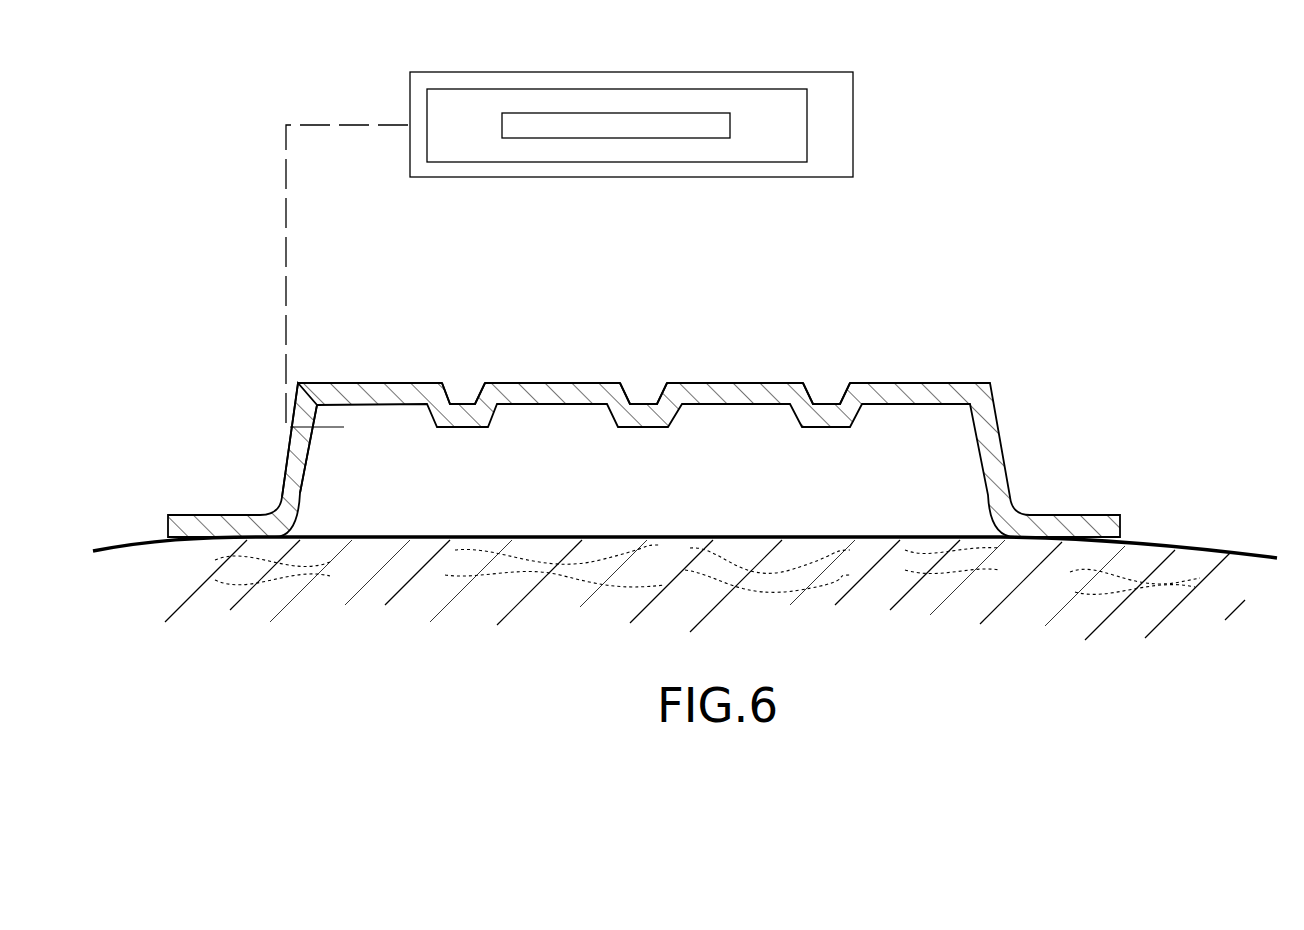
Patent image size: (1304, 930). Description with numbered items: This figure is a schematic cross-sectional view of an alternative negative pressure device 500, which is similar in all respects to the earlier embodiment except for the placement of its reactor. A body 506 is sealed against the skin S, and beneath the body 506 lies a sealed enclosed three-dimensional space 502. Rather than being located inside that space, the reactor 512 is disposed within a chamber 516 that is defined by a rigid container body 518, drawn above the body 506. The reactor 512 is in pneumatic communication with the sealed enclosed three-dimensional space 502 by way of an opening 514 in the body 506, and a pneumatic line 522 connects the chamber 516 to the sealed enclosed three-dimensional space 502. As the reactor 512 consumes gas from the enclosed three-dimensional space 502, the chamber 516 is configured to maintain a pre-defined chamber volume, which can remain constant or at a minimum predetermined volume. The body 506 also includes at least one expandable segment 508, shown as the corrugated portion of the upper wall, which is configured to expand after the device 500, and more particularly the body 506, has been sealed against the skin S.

The negative pressure device 500 is at (935, 123).
The sealed enclosed three-dimensional space 502 is at (622, 475).
The body 506 is at (300, 438).
The expandable segment 508 is at (538, 392).
The reactor 512 is at (648, 118).
The opening 514 is at (292, 418).
The chamber 516 is at (792, 138).
The rigid container body 518 is at (833, 102).
The pneumatic line 522 is at (286, 190).
The skin S is at (1218, 547).